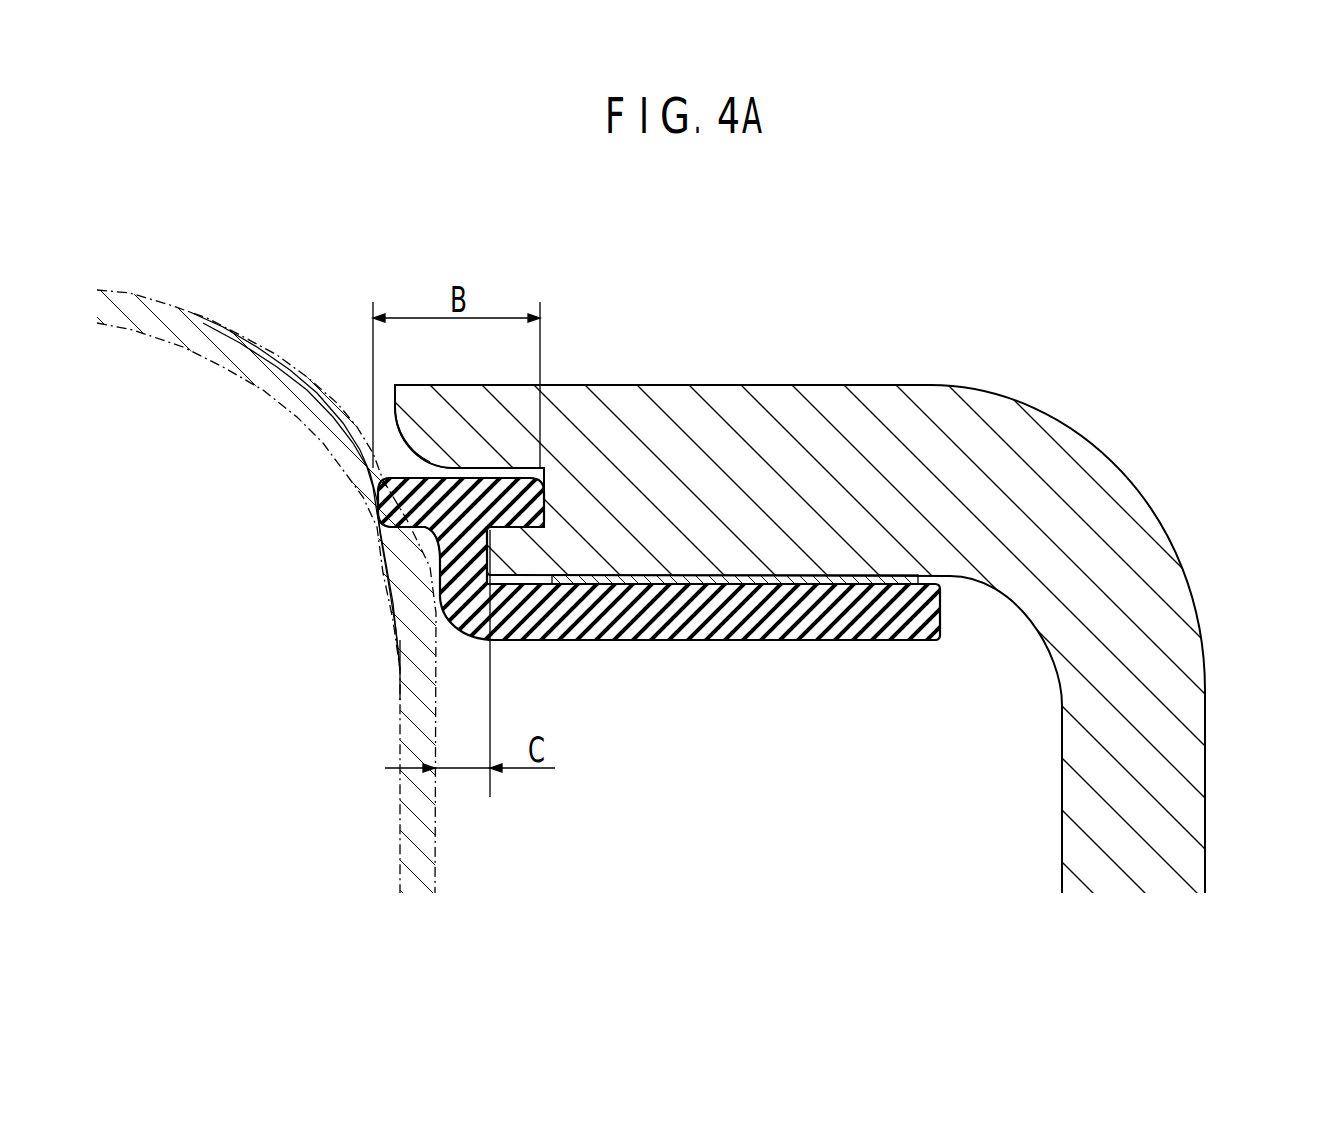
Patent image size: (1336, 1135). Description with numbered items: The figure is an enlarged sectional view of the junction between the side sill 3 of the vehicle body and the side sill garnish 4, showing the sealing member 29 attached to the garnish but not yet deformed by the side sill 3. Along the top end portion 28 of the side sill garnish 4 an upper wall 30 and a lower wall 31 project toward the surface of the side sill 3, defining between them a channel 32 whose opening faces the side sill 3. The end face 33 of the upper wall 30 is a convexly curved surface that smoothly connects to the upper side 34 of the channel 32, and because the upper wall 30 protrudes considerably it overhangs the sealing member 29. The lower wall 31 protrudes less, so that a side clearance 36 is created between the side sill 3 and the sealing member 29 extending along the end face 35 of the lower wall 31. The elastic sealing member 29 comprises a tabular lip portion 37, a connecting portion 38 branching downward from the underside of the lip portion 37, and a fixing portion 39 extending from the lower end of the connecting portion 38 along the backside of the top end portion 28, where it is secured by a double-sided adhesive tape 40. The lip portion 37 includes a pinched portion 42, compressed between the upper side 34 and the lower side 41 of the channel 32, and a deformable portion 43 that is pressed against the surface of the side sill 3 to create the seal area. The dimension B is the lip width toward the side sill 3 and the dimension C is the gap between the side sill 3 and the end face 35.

The side sill 3 is at (437, 853).
The side sill garnish 4 is at (1209, 679).
The top end portion 28 is at (780, 480).
The sealing member 29 is at (700, 641).
The upper wall 30 is at (500, 405).
The lower wall 31 is at (523, 557).
The channel 32 is at (546, 497).
The end face 33 is at (413, 449).
The upper side 34 is at (440, 535).
The end face 35 is at (430, 590).
The side clearance 36 is at (403, 670).
The lip portion 37 is at (538, 478).
The connecting portion 38 is at (430, 583).
The fixing portion 39 is at (790, 620).
The double-sided adhesive tape 40 is at (843, 574).
The lower side 41 is at (556, 530).
The pinched portion 42 is at (546, 522).
The deformable portion 43 is at (376, 514).